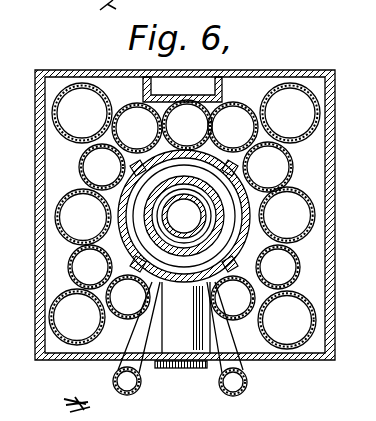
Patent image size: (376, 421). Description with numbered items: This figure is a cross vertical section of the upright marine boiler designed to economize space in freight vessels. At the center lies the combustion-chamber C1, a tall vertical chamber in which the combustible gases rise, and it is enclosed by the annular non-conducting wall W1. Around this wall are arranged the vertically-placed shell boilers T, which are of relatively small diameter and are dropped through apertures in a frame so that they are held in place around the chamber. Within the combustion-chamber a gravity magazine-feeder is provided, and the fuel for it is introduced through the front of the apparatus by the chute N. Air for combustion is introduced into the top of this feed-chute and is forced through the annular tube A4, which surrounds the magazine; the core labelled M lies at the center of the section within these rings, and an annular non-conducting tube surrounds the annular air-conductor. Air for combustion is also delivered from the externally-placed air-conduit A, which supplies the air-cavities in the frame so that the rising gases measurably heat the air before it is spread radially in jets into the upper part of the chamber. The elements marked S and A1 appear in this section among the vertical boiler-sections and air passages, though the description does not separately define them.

The supply channel S is at (182, 89).
The shell boilers T is at (171, 214).
The annular non-conducting wall W1 is at (128, 170).
The central core M is at (184, 216).
The annular tube A4 is at (210, 220).
The combustion-chamber C1 is at (235, 242).
The tube A1 is at (140, 248).
The chute N is at (182, 325).
The air-conduit A is at (254, 396).